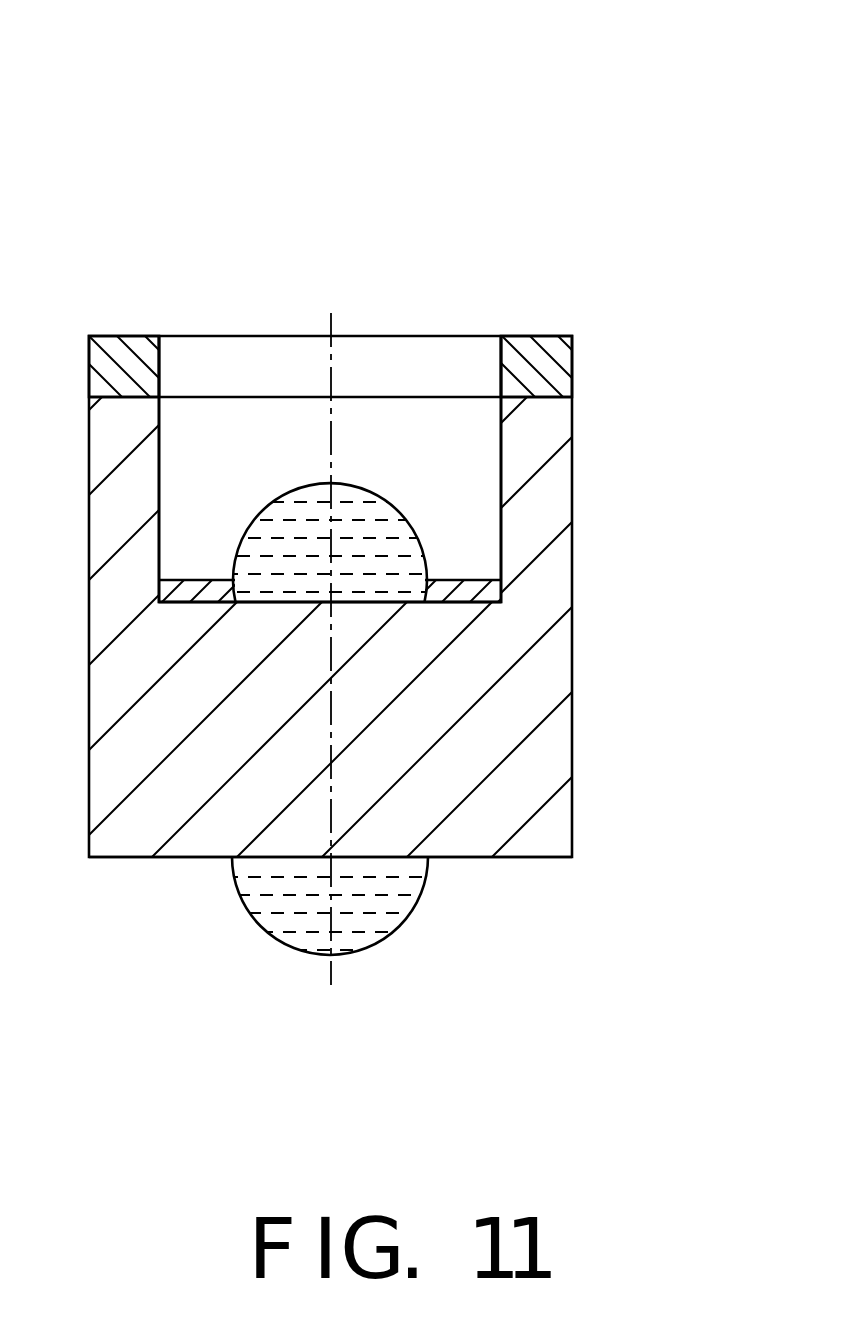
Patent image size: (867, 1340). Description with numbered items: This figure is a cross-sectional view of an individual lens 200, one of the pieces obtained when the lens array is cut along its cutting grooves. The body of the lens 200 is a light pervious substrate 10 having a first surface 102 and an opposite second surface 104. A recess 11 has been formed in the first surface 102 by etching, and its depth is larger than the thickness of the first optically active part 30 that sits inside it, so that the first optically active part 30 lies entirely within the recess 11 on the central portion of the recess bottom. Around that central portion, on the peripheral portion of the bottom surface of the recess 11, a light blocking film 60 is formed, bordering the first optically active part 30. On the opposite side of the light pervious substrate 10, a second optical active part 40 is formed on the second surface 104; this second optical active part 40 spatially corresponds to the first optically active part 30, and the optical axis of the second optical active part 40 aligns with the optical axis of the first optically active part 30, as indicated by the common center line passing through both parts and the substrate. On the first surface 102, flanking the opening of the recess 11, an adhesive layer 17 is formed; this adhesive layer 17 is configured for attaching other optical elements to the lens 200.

The lens 200 is at (410, 53).
The light pervious substrate 10 is at (525, 705).
The recess 11 is at (409, 447).
The adhesive layer 17 is at (132, 357).
The first surface 102 is at (523, 397).
The second surface 104 is at (518, 858).
The first optically active part 30 is at (390, 525).
The second optical active part 40 is at (350, 923).
The light blocking film 60 is at (467, 592).